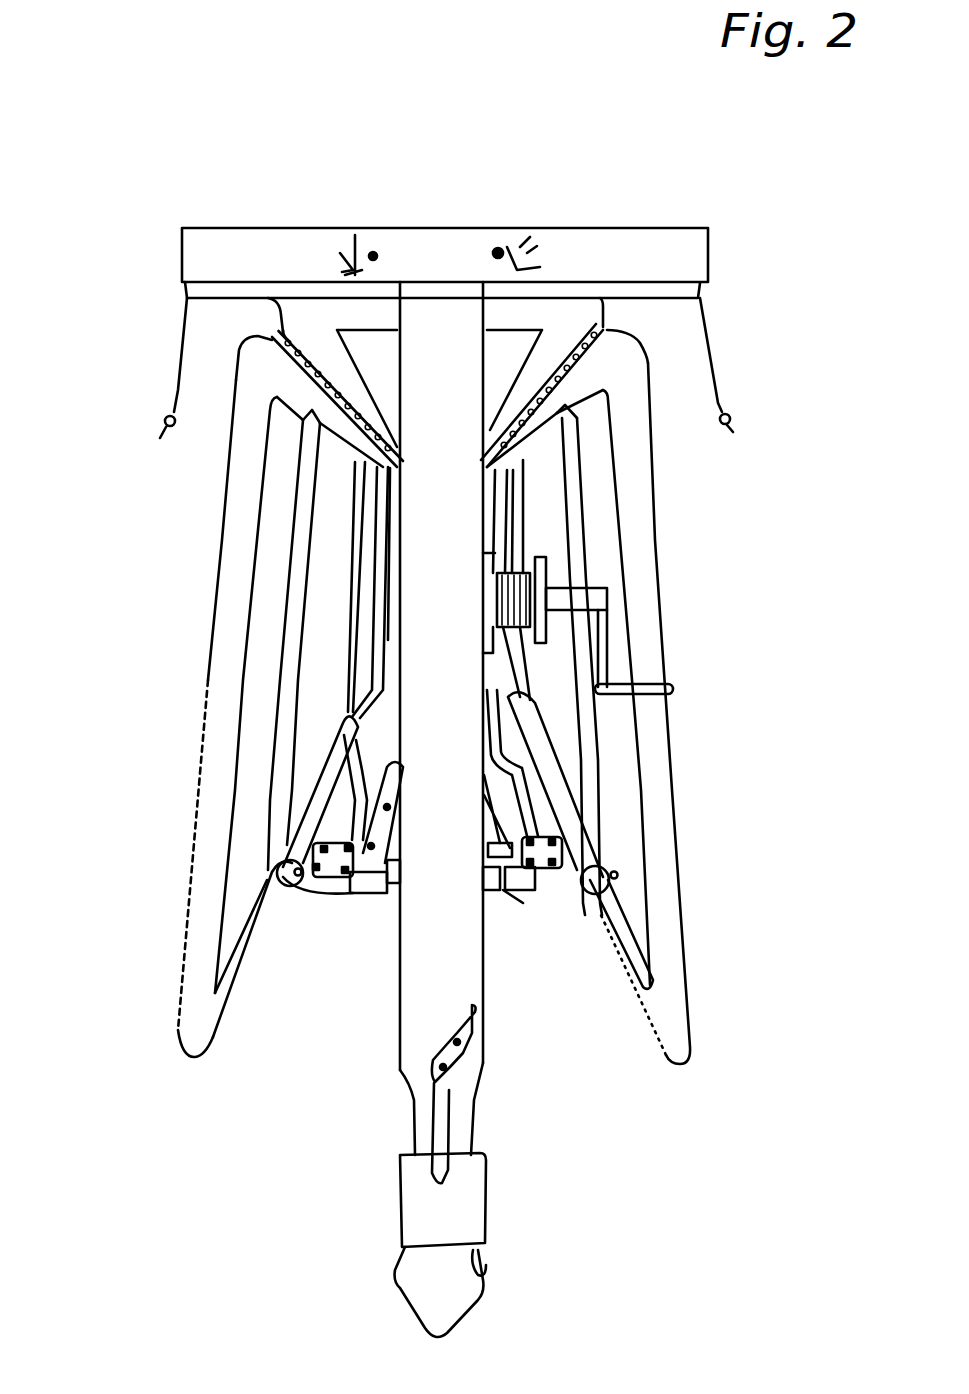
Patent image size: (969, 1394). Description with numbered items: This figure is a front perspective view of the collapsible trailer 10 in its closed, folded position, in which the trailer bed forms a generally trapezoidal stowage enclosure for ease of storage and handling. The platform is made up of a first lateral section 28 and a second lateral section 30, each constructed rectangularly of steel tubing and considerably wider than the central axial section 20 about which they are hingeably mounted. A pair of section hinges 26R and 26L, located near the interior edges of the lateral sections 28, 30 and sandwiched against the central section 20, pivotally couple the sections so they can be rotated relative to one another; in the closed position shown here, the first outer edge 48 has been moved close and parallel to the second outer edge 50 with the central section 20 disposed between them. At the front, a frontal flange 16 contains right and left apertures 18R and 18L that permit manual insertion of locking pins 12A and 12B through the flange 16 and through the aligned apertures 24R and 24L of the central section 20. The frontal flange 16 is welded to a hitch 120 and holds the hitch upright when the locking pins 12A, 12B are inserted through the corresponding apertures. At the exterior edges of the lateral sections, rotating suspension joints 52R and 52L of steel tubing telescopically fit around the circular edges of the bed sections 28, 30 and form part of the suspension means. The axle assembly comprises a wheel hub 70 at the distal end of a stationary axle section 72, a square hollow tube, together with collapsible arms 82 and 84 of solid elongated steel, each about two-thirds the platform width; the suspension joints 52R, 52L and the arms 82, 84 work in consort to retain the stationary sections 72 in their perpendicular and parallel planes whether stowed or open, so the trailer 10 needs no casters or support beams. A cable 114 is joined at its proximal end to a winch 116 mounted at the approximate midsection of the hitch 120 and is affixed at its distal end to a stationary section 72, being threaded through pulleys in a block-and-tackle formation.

The trailer 10 is at (716, 132).
The frontal flange 16 is at (708, 228).
The right aperture 18R is at (373, 252).
The left aperture 18L is at (505, 243).
The right aligned aperture 24R is at (340, 253).
The left aligned aperture 24L is at (527, 253).
The right section hinge 26R is at (273, 342).
The left section hinge 26L is at (607, 330).
The central axial section 20 is at (513, 388).
The locking pin 12A is at (160, 438).
The locking pin 12B is at (733, 431).
The first lateral section 28 is at (170, 1040).
The second lateral section 30 is at (683, 967).
The first outer edge 48 is at (262, 932).
The second outer edge 50 is at (617, 952).
The rotating suspension joint 52R is at (310, 792).
The rotating suspension joint 52L is at (570, 790).
The hub 70 is at (280, 874).
The stationary axle section 72 is at (343, 895).
The second collapsible arm 82 is at (485, 768).
The first collapsible arm 84 is at (390, 785).
The cable 114 is at (487, 710).
The winch 116 is at (607, 597).
The hitch 120 is at (400, 1070).